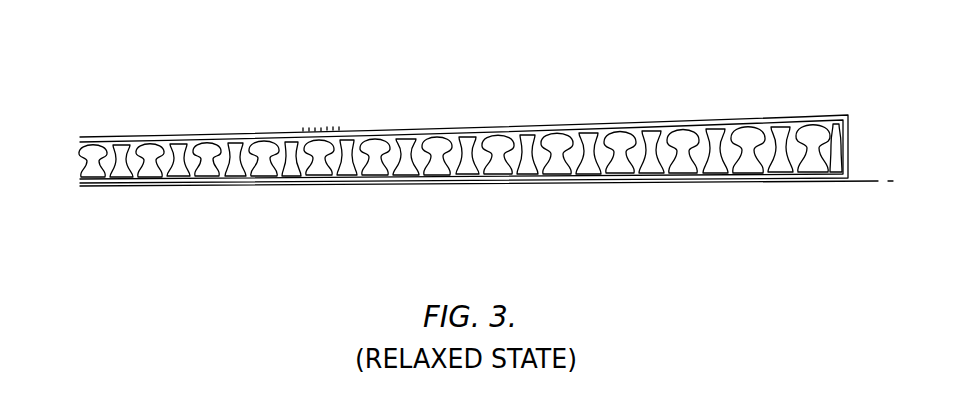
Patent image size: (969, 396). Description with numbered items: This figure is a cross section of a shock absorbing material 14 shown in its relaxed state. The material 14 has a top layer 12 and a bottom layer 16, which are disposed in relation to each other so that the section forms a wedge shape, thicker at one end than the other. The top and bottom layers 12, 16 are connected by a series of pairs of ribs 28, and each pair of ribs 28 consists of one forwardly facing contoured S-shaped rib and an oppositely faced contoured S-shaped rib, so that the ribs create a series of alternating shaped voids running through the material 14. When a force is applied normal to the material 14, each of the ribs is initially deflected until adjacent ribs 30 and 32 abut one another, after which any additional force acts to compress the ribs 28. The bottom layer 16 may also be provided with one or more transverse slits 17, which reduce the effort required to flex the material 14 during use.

The top layer 12 is at (849, 113).
The material 14 is at (833, 141).
The bottom layer 16 is at (826, 184).
The transverse slits 17 is at (381, 183).
The pair of ribs 28 is at (233, 182).
The adjacent rib 30 is at (268, 178).
The adjacent rib 32 is at (180, 186).